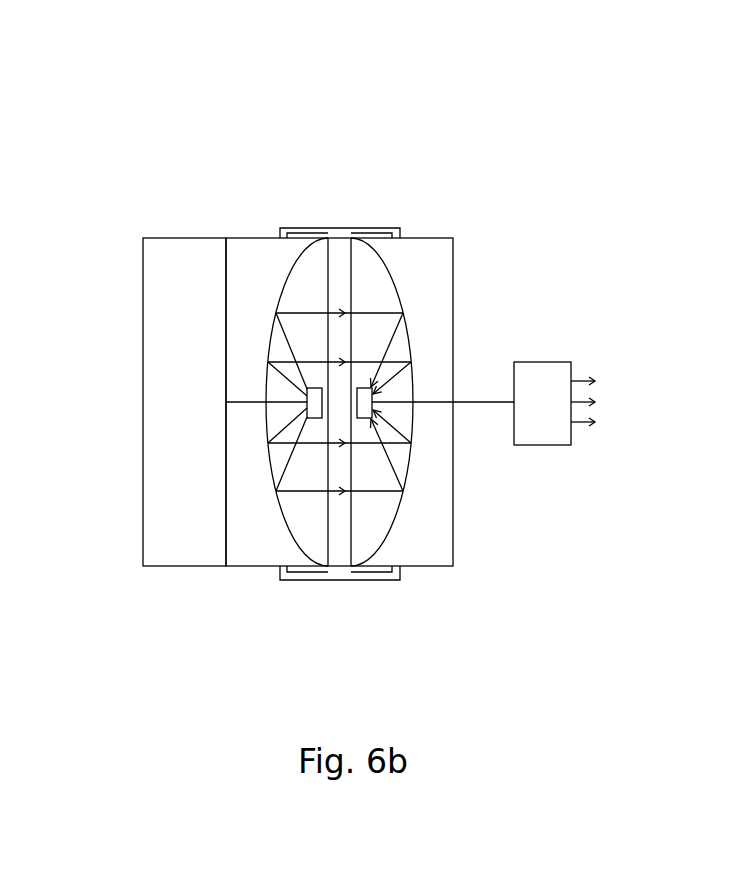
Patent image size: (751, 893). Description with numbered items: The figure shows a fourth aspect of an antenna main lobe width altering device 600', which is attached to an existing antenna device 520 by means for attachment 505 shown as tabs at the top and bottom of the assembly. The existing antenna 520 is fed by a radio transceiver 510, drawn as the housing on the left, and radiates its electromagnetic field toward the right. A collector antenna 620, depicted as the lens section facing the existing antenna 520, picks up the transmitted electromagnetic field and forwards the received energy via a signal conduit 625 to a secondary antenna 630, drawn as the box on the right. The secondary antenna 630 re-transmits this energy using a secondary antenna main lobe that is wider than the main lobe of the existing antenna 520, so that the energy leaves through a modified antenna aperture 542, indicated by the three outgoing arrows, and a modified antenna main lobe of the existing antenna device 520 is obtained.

The means for attachment 505 is at (299, 210).
The radio transceiver 510 is at (183, 238).
The existing antenna device 520 is at (255, 238).
The collector antenna 620 is at (455, 262).
The signal conduit 625 is at (487, 413).
The secondary antenna 630 is at (545, 362).
The modified antenna aperture 542 is at (632, 398).
The antenna main lobe width altering device 600' is at (530, 85).